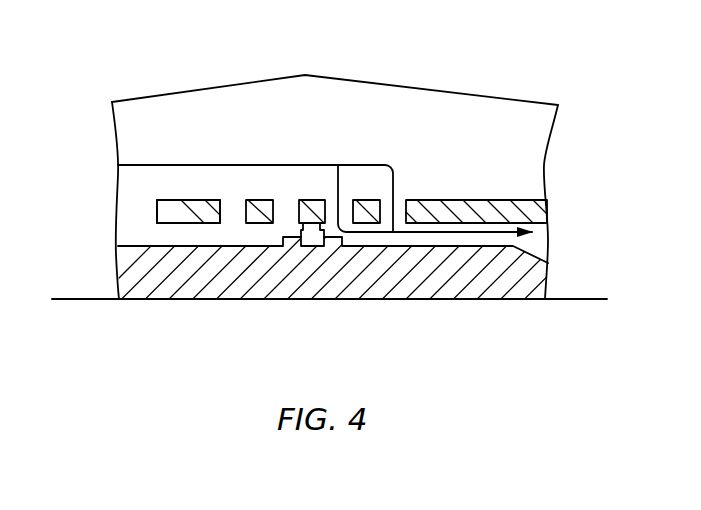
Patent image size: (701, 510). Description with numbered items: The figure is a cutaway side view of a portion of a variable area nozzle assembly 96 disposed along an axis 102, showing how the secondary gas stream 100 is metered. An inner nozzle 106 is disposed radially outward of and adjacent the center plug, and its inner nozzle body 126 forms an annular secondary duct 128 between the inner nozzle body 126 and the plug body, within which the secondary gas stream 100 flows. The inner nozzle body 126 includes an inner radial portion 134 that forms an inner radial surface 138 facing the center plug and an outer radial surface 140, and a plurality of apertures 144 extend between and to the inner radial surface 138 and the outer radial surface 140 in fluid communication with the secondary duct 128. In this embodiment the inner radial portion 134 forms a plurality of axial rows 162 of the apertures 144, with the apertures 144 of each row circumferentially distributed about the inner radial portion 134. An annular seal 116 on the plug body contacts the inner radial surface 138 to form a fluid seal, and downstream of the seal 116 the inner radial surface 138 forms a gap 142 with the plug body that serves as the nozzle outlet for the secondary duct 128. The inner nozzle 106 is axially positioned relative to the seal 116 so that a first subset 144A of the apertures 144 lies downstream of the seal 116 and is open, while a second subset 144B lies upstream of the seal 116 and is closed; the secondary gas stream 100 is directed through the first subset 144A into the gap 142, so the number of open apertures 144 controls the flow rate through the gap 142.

The variable area nozzle assembly 96 is at (442, 109).
The secondary gas stream 100 is at (425, 234).
The axis 102 is at (524, 300).
The inner nozzle 106 is at (171, 119).
The seal 116 is at (313, 237).
The inner nozzle body 126 is at (529, 174).
The secondary duct 128 is at (452, 155).
The inner radial portion 134 is at (464, 195).
The inner radial surface 138 is at (190, 223).
The outer radial surface 140 is at (178, 200).
The gap 142 is at (540, 245).
The apertures 144 is at (315, 144).
The first subset 144A is at (359, 185).
The second subset 144B is at (266, 180).
The axial rows 162 is at (305, 150).